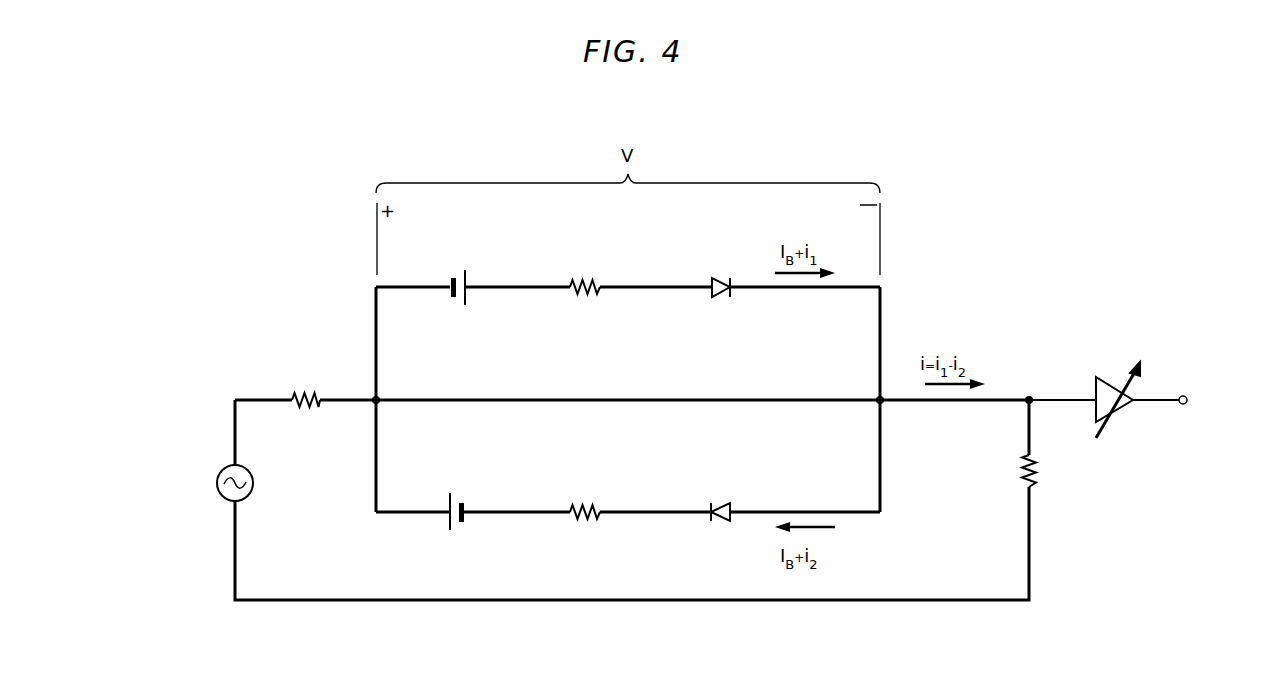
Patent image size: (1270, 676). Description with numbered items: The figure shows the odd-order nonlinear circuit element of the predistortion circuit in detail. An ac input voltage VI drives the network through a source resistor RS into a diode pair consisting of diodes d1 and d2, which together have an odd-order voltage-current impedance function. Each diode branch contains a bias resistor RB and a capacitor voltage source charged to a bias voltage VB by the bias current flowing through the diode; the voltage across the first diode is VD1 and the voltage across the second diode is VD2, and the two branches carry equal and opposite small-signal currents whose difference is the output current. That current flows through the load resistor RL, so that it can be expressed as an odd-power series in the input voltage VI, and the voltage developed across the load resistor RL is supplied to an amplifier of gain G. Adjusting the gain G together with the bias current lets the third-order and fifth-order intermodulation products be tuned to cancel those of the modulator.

The source resistor RS is at (306, 381).
The bias resistor RB is at (585, 406).
The load resistor RL is at (1013, 471).
The bias voltage VB is at (454, 406).
The first diode voltage VD1 is at (711, 269).
The second diode voltage VD2 is at (711, 537).
The ac input voltage VI is at (218, 483).
The amplifier gain G is at (1124, 400).